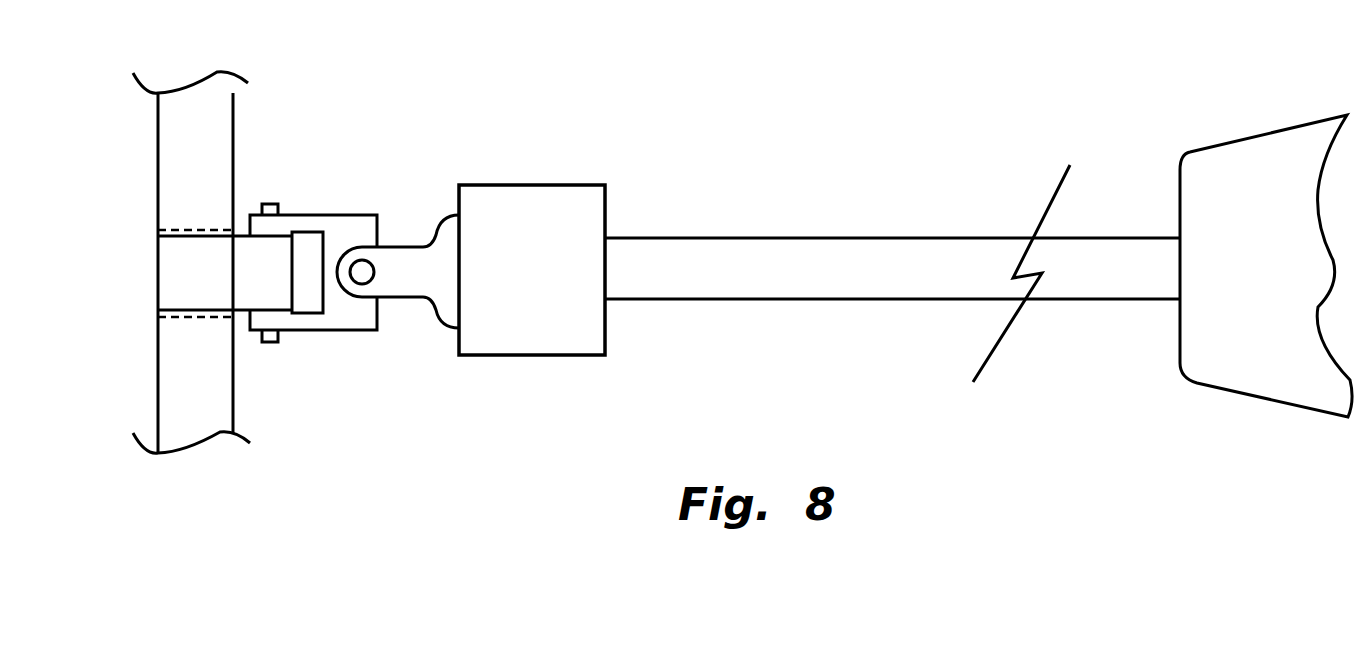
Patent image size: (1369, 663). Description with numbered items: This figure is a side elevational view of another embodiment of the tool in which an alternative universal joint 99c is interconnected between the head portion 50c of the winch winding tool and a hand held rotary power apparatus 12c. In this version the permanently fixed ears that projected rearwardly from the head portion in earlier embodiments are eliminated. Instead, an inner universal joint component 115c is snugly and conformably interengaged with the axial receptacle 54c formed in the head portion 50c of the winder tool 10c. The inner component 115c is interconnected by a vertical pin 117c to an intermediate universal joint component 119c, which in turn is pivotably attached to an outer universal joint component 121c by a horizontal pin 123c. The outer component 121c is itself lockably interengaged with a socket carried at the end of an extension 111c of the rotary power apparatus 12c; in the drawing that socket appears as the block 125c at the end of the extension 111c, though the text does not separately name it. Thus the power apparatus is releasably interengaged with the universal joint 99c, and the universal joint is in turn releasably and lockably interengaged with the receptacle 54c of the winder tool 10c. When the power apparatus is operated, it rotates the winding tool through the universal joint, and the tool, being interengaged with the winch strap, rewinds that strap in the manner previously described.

The winder tool 10c is at (185, 453).
The head portion 50c is at (235, 132).
The axial receptacle 54c is at (192, 228).
The inner universal joint component 115c is at (195, 281).
The intermediate universal joint component 119c is at (358, 215).
The vertical pin 117c is at (271, 342).
The outer universal joint component 121c is at (438, 330).
The horizontal pin 123c is at (366, 276).
The universal joint 99c is at (325, 188).
The coupling block 125c is at (572, 185).
The extension 111c is at (815, 238).
The hand held rotary power apparatus 12c is at (1253, 137).